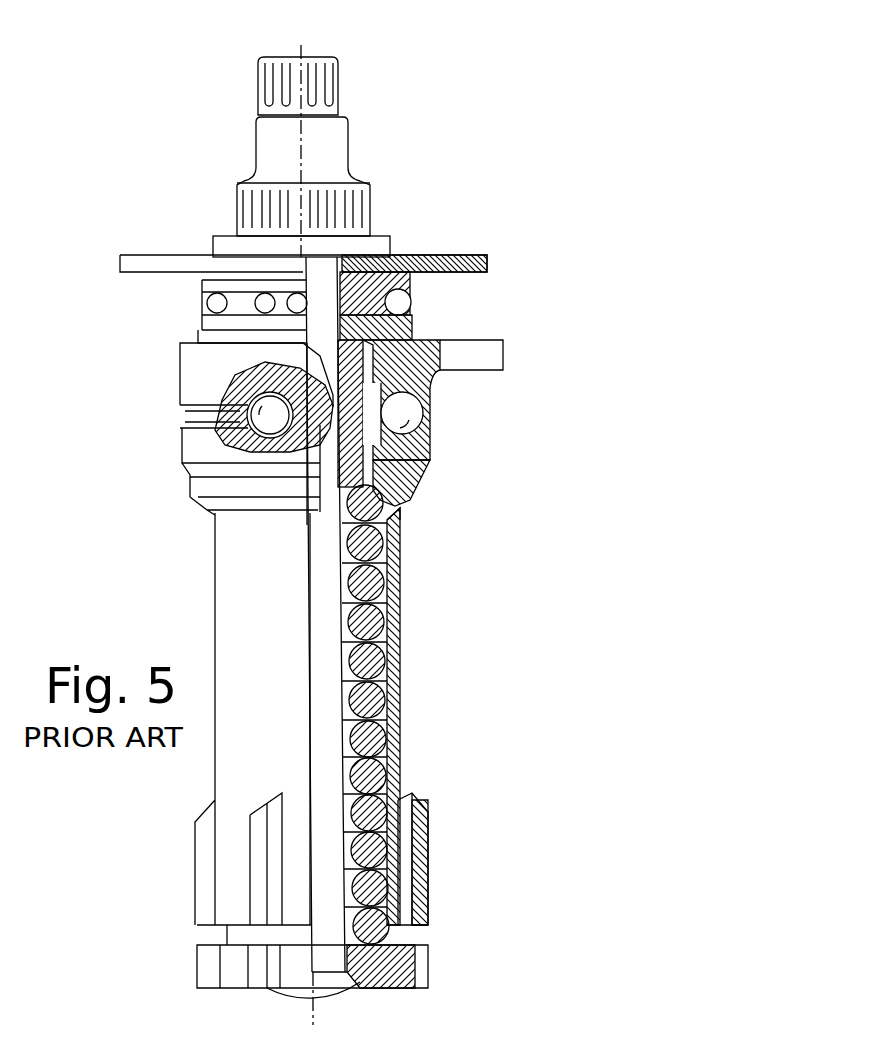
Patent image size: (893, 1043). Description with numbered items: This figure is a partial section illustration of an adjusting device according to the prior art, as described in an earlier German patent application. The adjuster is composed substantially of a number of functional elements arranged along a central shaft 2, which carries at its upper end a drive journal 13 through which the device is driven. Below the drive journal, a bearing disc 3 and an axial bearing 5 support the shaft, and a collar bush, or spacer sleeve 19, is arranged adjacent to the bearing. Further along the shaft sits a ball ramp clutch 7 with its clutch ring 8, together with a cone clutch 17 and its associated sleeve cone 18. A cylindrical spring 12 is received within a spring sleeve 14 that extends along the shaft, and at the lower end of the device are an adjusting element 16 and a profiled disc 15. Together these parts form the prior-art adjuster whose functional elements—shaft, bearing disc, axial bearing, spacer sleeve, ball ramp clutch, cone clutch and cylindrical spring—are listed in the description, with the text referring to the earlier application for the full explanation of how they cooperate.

The drive journal 13 is at (327, 90).
The shaft 2 is at (338, 150).
The bearing disc 3 is at (455, 255).
The axial bearing 5 is at (434, 299).
The spacer sleeve 19 is at (420, 320).
The ball ramp clutch 7 is at (475, 403).
The clutch ring 8 is at (413, 497).
The cone clutch 17 is at (467, 517).
The sleeve cone 18 is at (402, 523).
The spring sleeve 14 is at (402, 737).
The cylindrical spring 12 is at (392, 932).
The adjusting element 16 is at (283, 997).
The profiled disc 15 is at (397, 988).